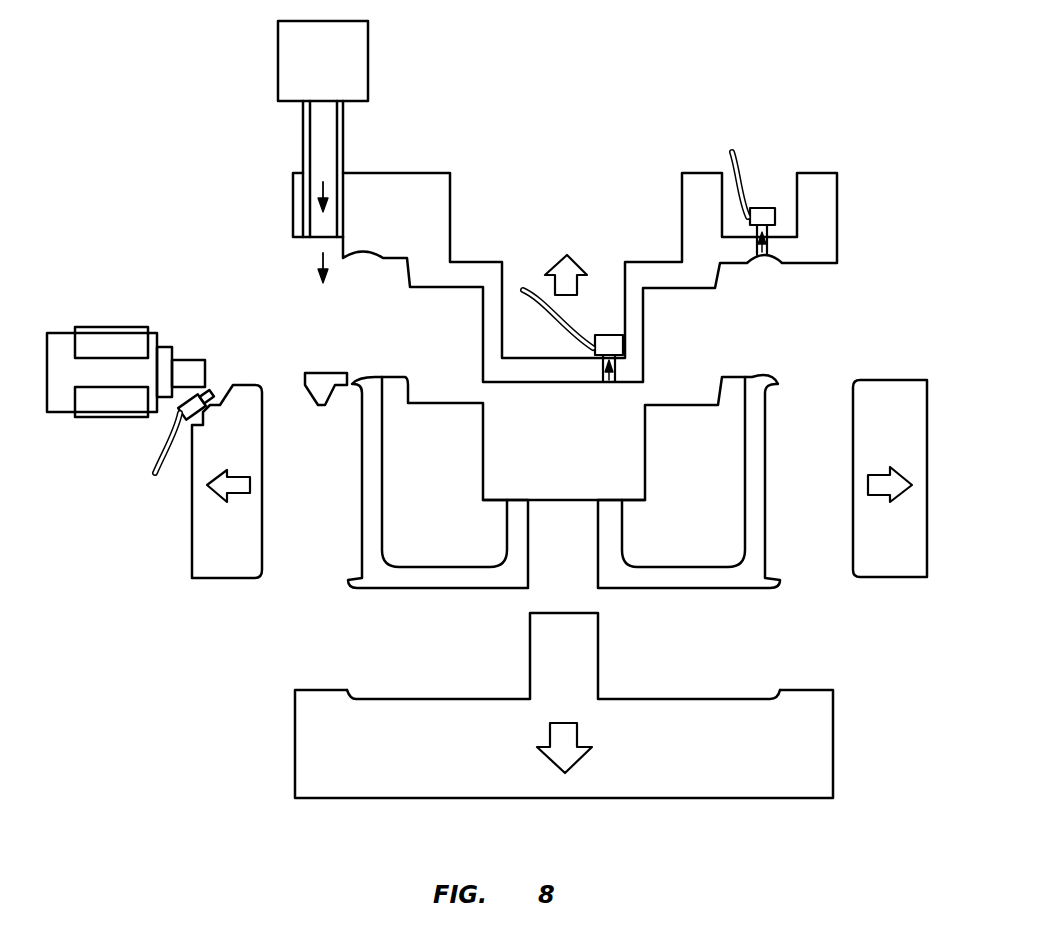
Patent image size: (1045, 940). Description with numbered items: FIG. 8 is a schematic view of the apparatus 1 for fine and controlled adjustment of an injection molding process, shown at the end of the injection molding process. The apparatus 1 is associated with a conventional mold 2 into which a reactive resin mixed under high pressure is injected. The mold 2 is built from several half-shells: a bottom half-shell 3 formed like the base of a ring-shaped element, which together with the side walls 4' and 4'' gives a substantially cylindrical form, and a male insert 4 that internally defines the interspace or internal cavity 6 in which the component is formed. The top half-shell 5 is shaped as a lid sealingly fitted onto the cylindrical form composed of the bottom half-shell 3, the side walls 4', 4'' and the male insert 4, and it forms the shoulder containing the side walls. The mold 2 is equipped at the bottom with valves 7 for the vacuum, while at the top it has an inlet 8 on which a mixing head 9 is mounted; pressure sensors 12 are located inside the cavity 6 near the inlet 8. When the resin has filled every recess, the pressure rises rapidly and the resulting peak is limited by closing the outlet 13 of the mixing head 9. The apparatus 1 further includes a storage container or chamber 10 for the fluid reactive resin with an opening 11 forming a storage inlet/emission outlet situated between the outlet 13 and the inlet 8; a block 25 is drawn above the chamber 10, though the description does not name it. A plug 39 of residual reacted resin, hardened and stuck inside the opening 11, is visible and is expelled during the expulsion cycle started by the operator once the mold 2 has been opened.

The apparatus 1 is at (228, 655).
The mold 2 is at (840, 690).
The bottom half-shell 3 is at (415, 720).
The male insert 4 is at (683, 463).
The side wall 4' is at (195, 481).
The side wall 4'' is at (866, 478).
The top half-shell 5 is at (430, 182).
The interspace or internal cavity 6 is at (473, 578).
The valve for the vacuum 7 is at (608, 334).
The inlet 8 is at (220, 397).
The mixing head 9 is at (93, 342).
The storage container or chamber 10 is at (354, 161).
The opening 11 is at (308, 217).
The pressure sensor 12 is at (168, 451).
The outlet of the mixing head 13 is at (193, 367).
The control unit 25 is at (298, 49).
The plug 39 is at (318, 263).